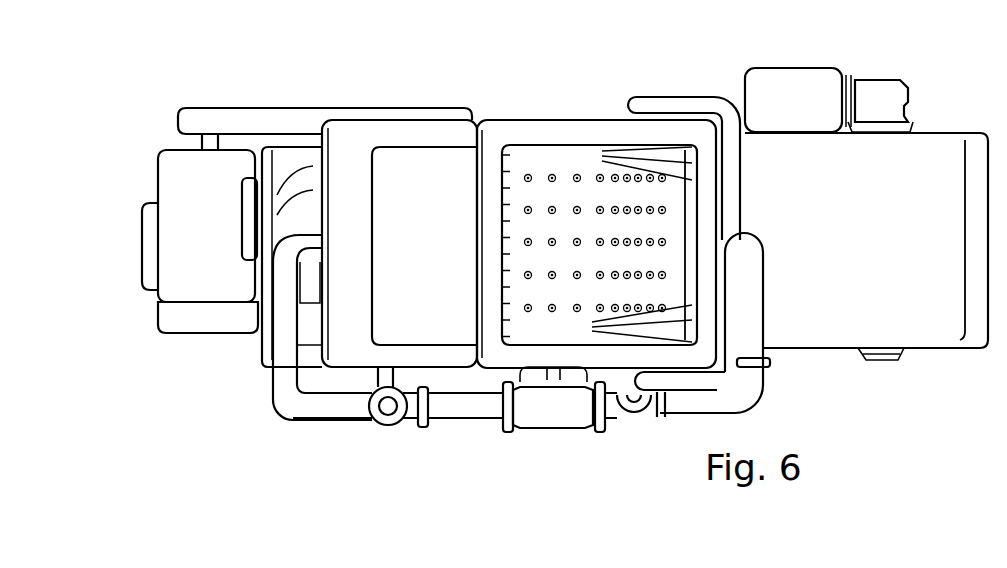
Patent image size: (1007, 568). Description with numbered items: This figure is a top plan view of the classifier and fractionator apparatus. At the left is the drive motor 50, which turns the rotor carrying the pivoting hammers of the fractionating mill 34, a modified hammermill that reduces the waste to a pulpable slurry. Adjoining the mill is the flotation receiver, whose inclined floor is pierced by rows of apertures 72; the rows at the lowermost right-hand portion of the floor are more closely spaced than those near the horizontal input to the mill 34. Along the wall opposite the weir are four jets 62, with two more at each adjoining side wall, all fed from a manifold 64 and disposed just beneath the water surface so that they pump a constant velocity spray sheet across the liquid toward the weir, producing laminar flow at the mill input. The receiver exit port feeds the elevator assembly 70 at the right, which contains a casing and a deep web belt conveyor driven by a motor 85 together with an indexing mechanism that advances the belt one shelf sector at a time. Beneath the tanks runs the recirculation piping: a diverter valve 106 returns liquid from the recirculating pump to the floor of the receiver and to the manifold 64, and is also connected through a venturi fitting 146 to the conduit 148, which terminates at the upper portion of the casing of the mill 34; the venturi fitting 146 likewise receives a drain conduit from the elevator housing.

The drive motor 50 is at (172, 158).
The conduit 148 is at (283, 376).
The fractionating mill 34 is at (432, 248).
The apertures 72 is at (552, 172).
The jets 62 is at (628, 246).
The manifold 64 is at (643, 103).
The motor 85 is at (748, 82).
The elevator assembly 70 is at (912, 357).
The venturi fitting 146 is at (391, 428).
The diverter valve 106 is at (562, 428).